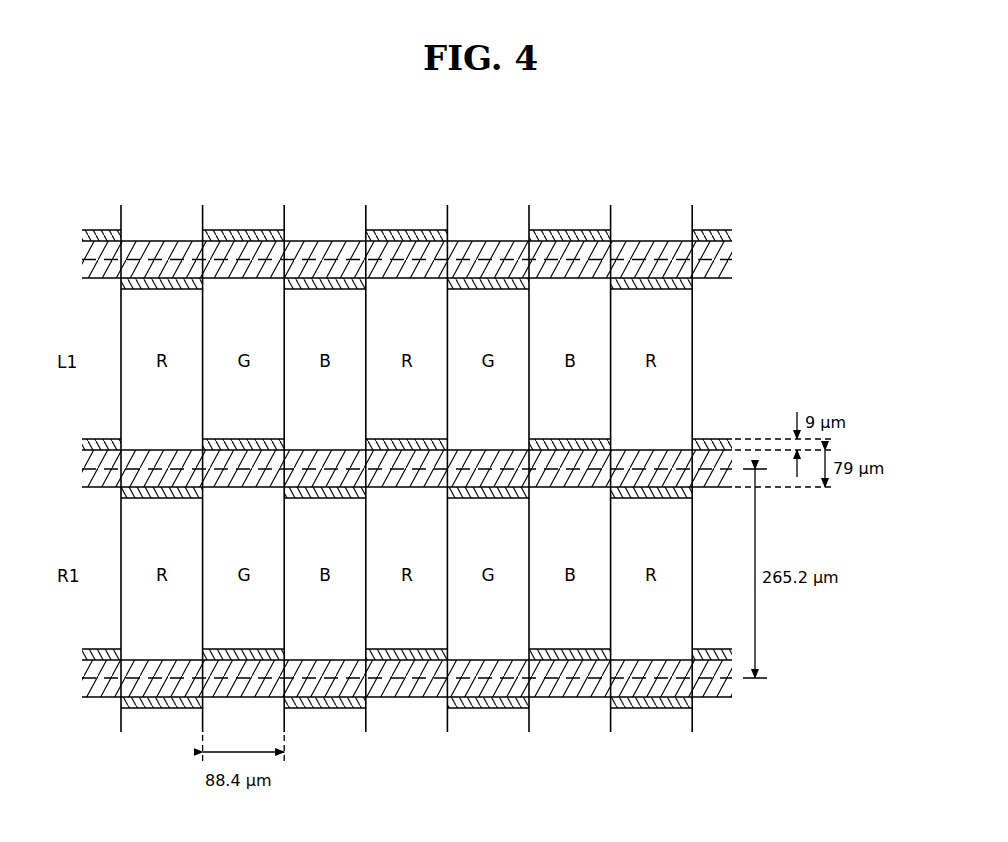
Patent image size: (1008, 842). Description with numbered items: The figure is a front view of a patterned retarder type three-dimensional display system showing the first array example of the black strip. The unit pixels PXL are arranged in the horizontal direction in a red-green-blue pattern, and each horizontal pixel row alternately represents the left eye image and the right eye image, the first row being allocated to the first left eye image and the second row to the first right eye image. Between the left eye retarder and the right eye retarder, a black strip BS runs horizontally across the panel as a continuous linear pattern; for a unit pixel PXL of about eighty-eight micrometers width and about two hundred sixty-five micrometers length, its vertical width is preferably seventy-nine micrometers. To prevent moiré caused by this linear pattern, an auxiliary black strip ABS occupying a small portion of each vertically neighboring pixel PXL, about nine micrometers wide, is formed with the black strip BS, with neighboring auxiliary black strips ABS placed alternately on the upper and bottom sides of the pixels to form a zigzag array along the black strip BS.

The auxiliary black strip ABS is at (565, 229).
The black strip BS is at (648, 240).
The unit pixel PXL is at (684, 316).